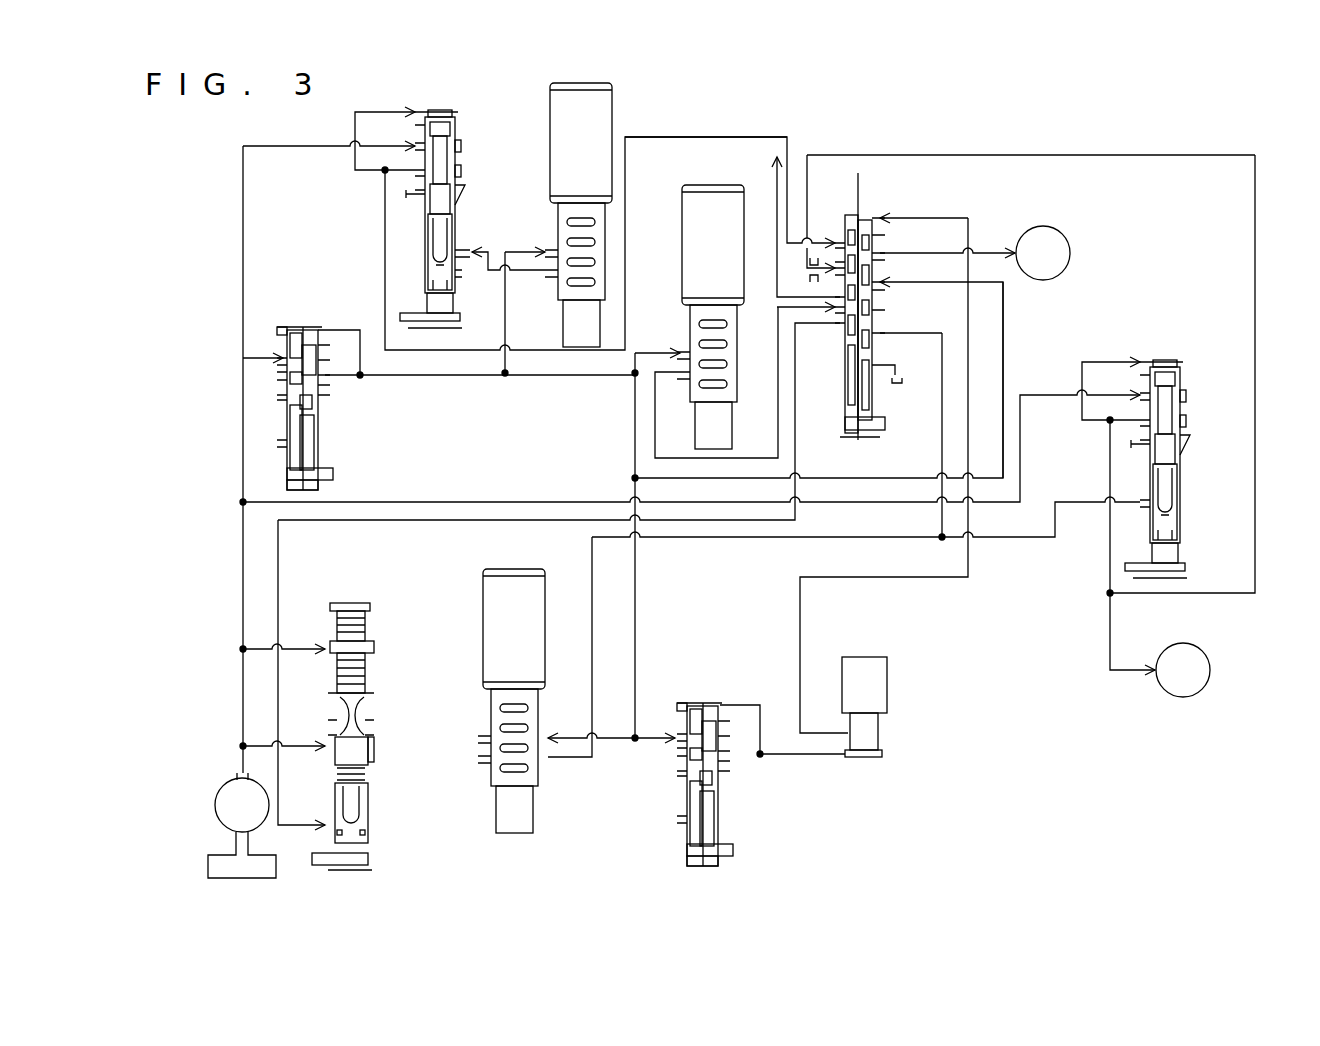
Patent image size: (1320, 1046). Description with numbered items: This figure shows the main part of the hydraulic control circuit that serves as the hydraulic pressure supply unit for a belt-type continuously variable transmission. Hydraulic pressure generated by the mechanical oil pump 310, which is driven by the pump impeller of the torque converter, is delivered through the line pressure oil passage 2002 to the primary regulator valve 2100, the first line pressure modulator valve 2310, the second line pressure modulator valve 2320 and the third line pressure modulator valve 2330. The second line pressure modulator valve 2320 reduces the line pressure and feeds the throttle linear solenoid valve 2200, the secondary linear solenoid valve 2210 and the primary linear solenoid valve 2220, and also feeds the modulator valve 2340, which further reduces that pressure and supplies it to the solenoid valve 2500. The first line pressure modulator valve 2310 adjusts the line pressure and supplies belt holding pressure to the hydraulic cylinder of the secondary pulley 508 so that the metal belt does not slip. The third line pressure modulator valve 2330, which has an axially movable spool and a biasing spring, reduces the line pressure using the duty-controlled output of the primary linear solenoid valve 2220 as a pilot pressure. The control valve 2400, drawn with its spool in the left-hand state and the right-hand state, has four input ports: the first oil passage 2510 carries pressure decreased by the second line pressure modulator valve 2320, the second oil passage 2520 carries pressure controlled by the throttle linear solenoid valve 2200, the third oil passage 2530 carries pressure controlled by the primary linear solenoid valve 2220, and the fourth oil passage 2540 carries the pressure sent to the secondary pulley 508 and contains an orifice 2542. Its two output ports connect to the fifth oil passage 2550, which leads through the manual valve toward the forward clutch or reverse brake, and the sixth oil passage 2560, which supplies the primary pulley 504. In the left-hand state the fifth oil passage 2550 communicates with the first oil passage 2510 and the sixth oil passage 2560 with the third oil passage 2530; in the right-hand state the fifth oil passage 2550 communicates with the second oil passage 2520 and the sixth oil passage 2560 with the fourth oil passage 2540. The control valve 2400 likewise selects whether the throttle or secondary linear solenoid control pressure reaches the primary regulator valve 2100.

The mechanical oil pump 310 is at (218, 790).
The primary pulley 504 is at (1058, 228).
The secondary pulley 508 is at (1200, 647).
The line pressure oil passage 2002 is at (243, 591).
The primary regulator valve 2100 is at (380, 747).
The SLT linear solenoid valve 2200 is at (730, 183).
The SLS linear solenoid valve 2210 is at (483, 600).
The SLP linear solenoid valve 2220 is at (613, 128).
The LPM 1 valve 2310 is at (1173, 357).
The LPM 2 valve 2320 is at (302, 325).
The LPM 3 valve 2330 is at (458, 143).
The modulator valve 2340 is at (708, 700).
The control valve 2400 is at (870, 380).
The SL solenoid valve 2500 is at (878, 733).
The first oil passage 2510 is at (1005, 332).
The second oil passage 2520 is at (725, 458).
The third oil passage 2530 is at (718, 142).
The fourth oil passage 2540 is at (1040, 155).
The orifice 2542 is at (813, 287).
The fifth oil passage 2550 is at (777, 197).
The sixth oil passage 2560 is at (988, 250).